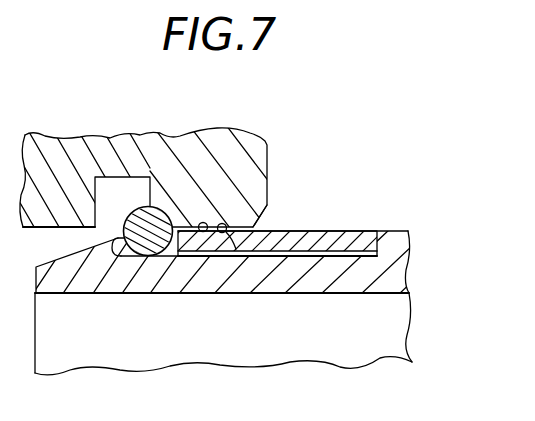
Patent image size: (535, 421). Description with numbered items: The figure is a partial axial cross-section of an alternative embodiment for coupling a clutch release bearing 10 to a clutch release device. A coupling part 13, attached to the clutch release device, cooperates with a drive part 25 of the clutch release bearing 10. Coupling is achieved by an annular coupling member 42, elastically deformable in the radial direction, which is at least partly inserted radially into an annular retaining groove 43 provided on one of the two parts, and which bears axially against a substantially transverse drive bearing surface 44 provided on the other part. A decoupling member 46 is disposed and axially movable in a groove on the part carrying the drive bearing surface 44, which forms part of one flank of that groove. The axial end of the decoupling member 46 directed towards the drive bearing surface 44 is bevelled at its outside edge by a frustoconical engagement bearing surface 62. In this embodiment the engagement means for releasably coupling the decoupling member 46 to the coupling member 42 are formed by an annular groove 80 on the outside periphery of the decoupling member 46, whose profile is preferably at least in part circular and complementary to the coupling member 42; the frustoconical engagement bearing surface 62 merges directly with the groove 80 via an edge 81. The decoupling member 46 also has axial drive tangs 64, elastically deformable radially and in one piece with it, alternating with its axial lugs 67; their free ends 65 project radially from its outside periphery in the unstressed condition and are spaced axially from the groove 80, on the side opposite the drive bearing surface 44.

The clutch release bearing 10 is at (433, 243).
The coupling part 13 is at (274, 135).
The drive part 25 is at (348, 286).
The annular coupling member 42 is at (140, 198).
The annular retaining groove 43 is at (115, 184).
The drive bearing surface 44 is at (133, 255).
The decoupling member 46 is at (364, 222).
The frustoconical engagement bearing surface 62 is at (172, 257).
The axial drive tangs 64 is at (258, 236).
The free end 65 is at (260, 221).
The axial lugs 67 is at (220, 233).
The annular groove 80 is at (232, 250).
The edge 81 is at (203, 232).